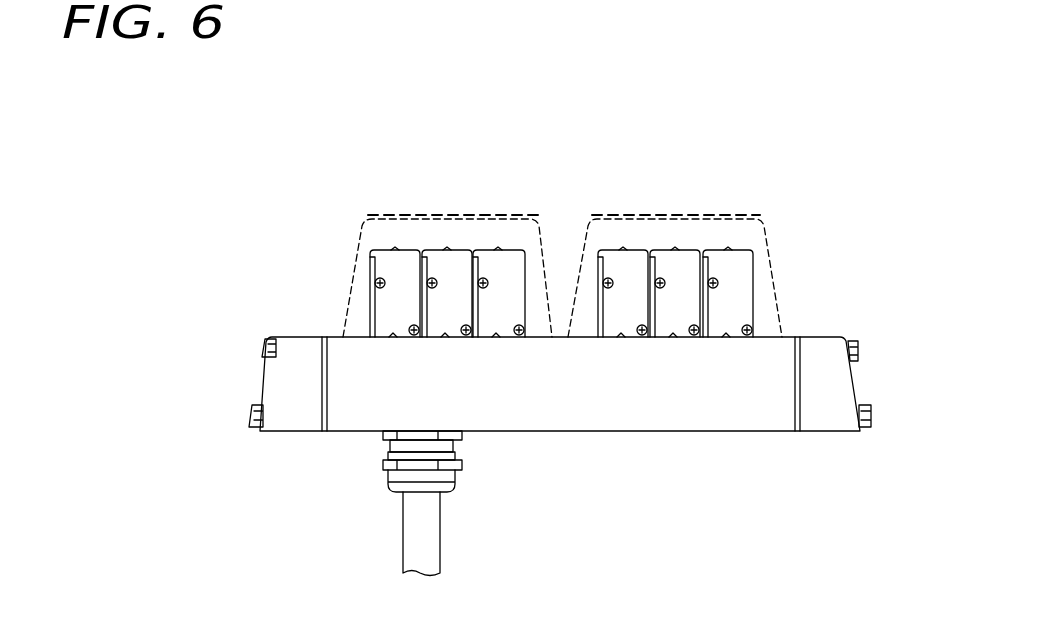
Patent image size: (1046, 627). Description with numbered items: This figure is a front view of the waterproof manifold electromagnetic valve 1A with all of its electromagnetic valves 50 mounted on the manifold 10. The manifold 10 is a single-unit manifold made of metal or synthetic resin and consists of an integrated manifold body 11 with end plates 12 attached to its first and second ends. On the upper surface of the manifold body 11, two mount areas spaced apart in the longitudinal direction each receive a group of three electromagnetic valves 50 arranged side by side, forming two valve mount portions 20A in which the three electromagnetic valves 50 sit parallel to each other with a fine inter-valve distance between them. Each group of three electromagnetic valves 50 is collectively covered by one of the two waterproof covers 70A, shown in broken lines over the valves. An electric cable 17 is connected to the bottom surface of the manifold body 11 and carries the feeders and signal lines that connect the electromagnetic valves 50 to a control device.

The manifold electromagnetic valve 1A is at (855, 112).
The manifold 10 is at (560, 445).
The manifold body 11 is at (708, 405).
The end plate 12 is at (293, 388).
The electric cable 17 is at (420, 536).
The valve mount portion 20A is at (561, 221).
The electromagnetic valve 50 is at (457, 265).
The waterproof cover 70A is at (390, 215).